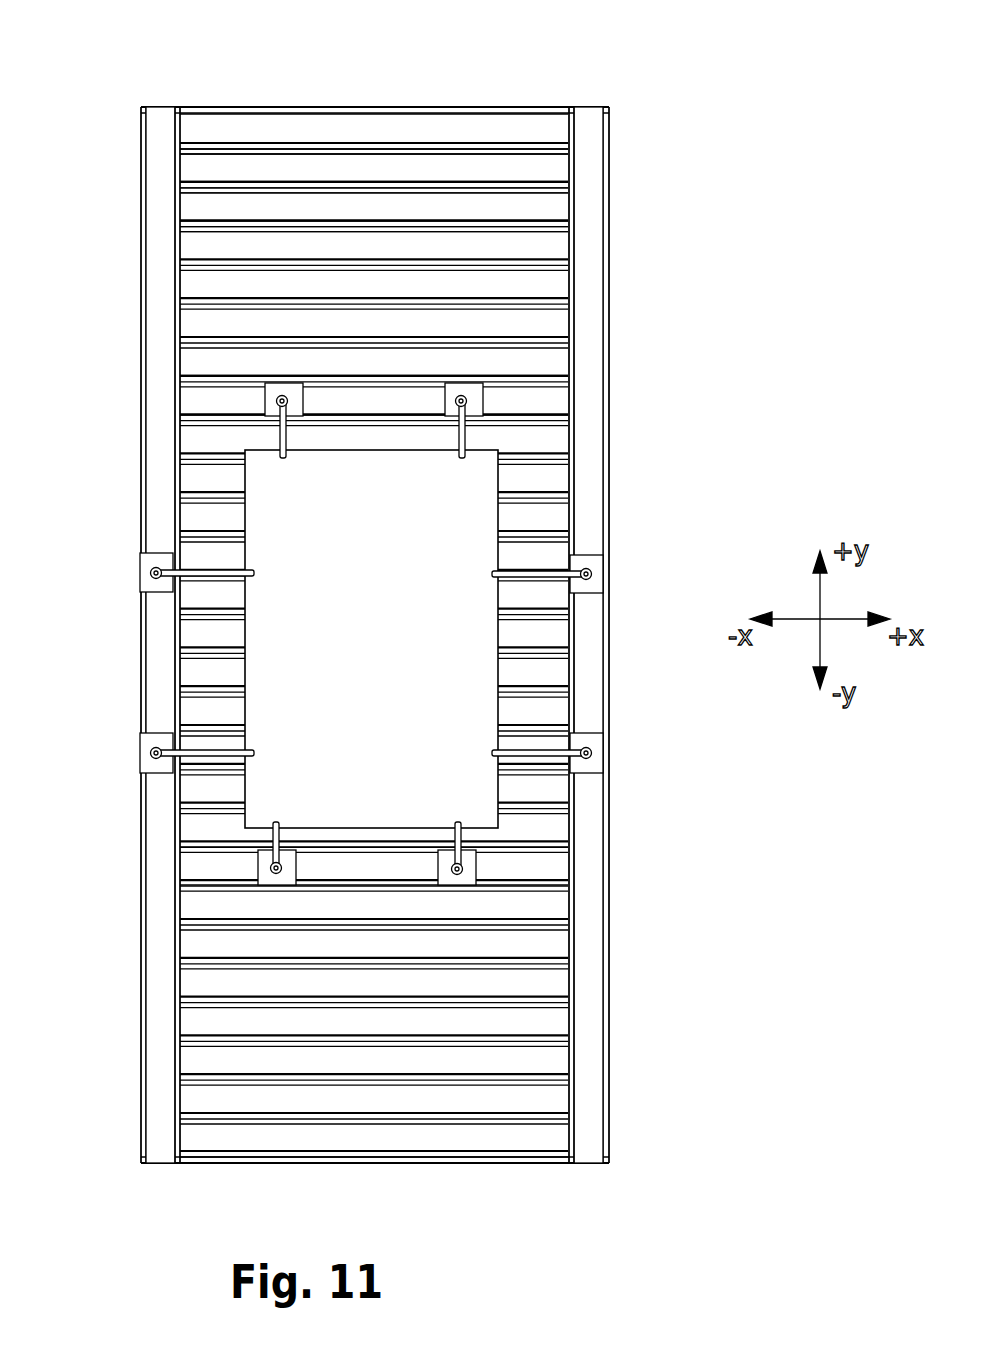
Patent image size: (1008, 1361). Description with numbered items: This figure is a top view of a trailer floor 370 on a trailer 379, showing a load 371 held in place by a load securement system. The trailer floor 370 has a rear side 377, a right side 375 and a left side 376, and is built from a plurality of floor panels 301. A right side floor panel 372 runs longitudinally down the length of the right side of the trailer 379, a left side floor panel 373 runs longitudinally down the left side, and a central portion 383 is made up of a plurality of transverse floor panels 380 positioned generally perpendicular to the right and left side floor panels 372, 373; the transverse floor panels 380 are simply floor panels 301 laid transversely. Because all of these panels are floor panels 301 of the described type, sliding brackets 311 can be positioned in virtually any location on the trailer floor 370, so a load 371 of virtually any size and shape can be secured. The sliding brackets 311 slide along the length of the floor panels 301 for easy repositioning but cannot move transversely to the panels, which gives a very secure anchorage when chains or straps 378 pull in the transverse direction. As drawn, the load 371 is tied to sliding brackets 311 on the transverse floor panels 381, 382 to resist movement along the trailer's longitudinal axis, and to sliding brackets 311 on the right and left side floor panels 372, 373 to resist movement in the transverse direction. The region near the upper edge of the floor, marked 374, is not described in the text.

The floor panel 301 is at (645, 190).
The sliding bracket 311 is at (270, 388).
The trailer floor 370 is at (598, 107).
The load 371 is at (371, 639).
The right side floor panel 372 is at (597, 275).
The left side floor panel 373 is at (163, 263).
The top beam 374 is at (240, 107).
The right side 375 is at (607, 440).
The left side 376 is at (138, 440).
The rear side 377 is at (397, 1157).
The chains or straps 378 is at (462, 458).
The trailer 379 is at (188, 58).
The transverse floor panels 380 is at (423, 210).
The transverse floor panel 381 is at (530, 395).
The transverse floor panel 382 is at (512, 868).
The central portion 383 is at (522, 107).